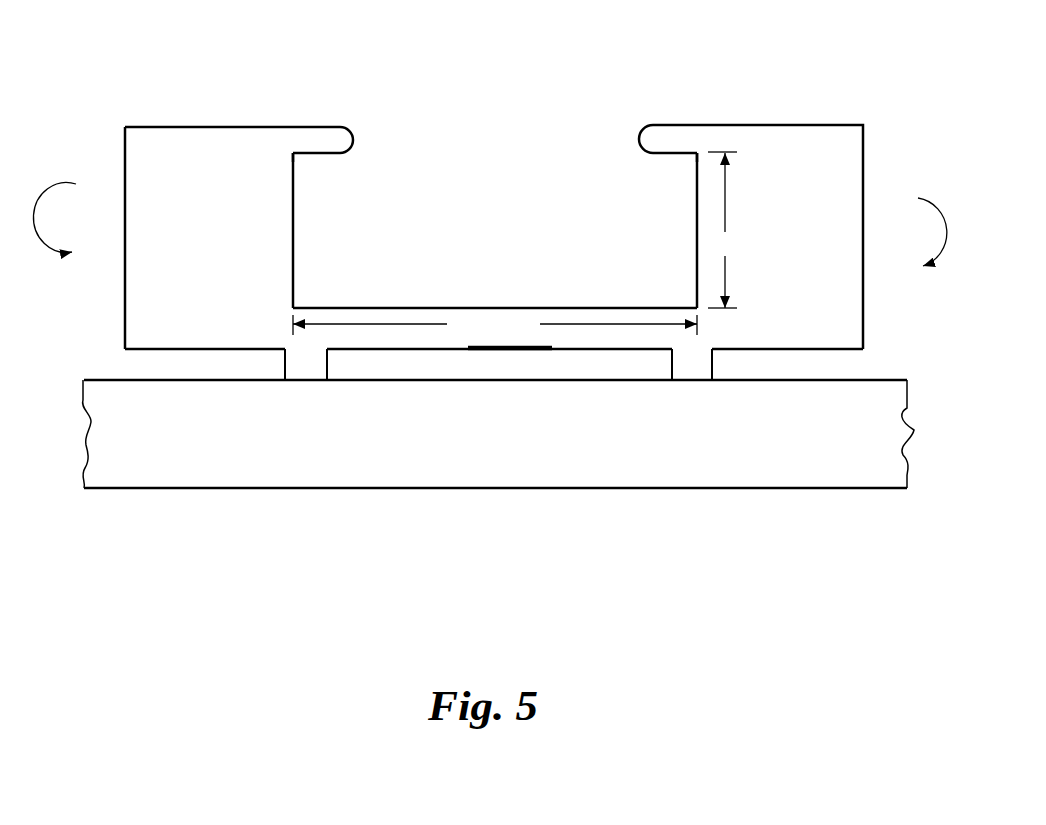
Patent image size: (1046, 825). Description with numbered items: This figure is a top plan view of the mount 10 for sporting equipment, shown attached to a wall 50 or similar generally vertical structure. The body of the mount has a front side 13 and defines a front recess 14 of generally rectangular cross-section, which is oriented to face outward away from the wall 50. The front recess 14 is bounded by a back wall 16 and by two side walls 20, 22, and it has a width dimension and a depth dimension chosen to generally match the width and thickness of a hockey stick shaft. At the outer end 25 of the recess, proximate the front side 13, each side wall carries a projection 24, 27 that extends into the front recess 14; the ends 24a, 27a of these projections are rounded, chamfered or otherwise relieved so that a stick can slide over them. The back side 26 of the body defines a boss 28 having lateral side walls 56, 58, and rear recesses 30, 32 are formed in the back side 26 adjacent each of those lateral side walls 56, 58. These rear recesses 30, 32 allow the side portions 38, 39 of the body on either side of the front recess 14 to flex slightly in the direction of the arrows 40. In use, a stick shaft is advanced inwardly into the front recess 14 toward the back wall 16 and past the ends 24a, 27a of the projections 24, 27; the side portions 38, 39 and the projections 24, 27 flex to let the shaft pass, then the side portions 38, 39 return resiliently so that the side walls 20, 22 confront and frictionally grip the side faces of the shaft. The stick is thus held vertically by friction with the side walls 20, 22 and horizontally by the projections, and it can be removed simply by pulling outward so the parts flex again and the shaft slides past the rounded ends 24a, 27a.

The mount 10 is at (810, 98).
The front side 13 is at (275, 126).
The front recess 14 is at (492, 156).
The back wall 16 is at (535, 306).
The side wall 20 is at (694, 247).
The side wall 22 is at (296, 252).
The projection 24 is at (665, 135).
The end of projection 24a is at (655, 138).
The outer end 25 is at (293, 153).
The back side 26 is at (759, 347).
The projection 27 is at (323, 133).
The end of projection 27a is at (335, 140).
The boss 28 is at (562, 363).
The rear recess 30 is at (831, 362).
The rear recess 32 is at (137, 363).
The side portion 38 is at (767, 162).
The side portion 39 is at (205, 182).
The arrows 40 is at (489, 248).
The wall 50 is at (300, 436).
The lateral side wall 56 is at (687, 362).
The lateral side wall 58 is at (293, 368).